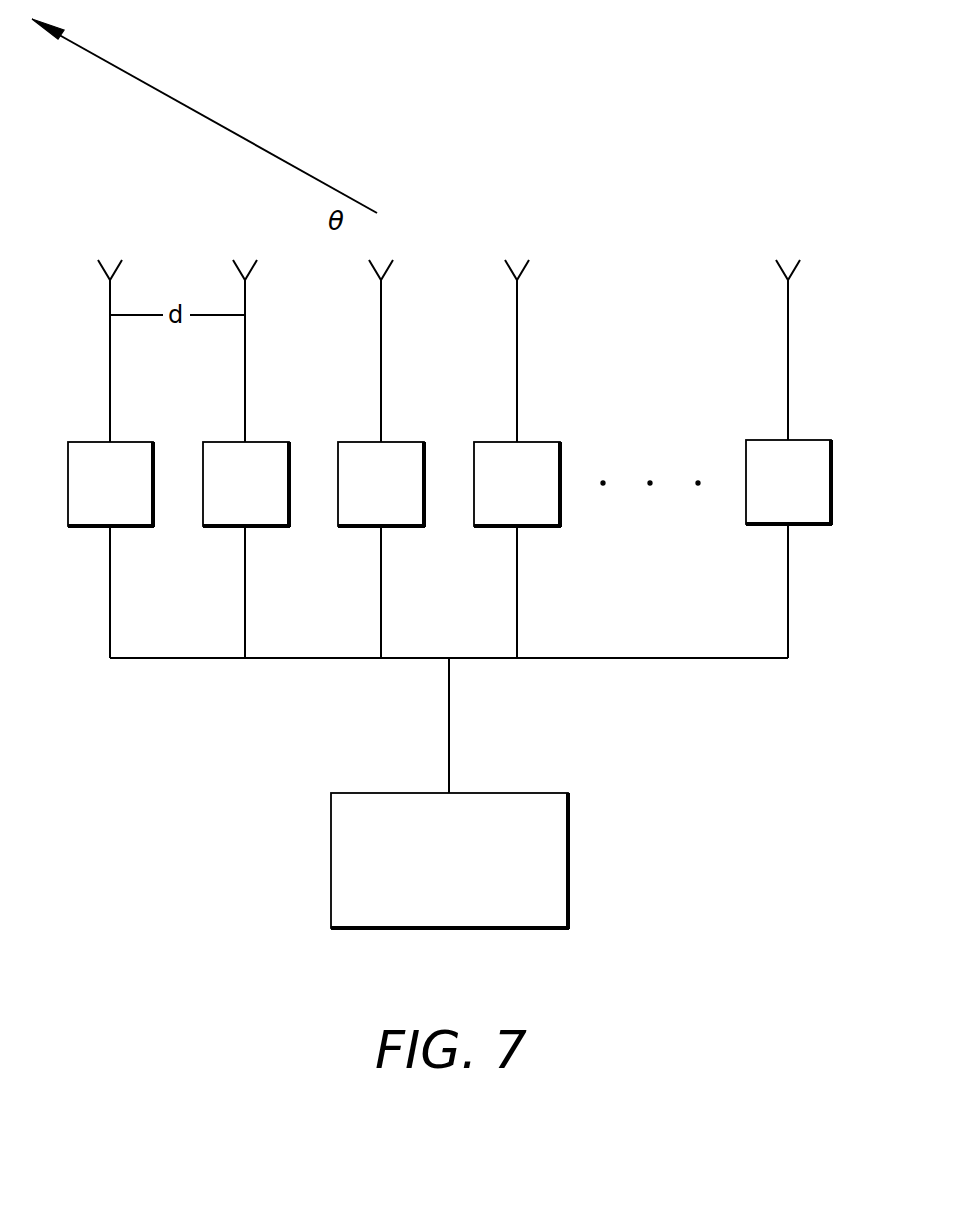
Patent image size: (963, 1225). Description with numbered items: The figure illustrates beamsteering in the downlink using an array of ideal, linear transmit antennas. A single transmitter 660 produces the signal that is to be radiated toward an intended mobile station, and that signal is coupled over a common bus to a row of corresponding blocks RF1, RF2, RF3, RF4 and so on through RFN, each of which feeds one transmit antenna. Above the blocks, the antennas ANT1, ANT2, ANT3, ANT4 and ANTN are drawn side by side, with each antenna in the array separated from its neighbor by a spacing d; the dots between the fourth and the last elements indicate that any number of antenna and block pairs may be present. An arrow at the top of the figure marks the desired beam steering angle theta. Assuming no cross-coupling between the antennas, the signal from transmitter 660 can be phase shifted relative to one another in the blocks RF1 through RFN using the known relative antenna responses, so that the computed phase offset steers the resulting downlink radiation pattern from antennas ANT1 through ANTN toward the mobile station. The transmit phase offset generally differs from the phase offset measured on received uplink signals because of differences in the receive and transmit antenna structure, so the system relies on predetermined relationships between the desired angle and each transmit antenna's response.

The transmitter 660 is at (568, 861).
The transmit antenna ANT1 is at (110, 380).
The transmit antenna ANT2 is at (245, 380).
The transmit antenna ANT3 is at (381, 380).
The transmit antenna ANT4 is at (517, 380).
The transmit antenna ANTN is at (788, 380).
The RF block RF1 is at (111, 484).
The RF block RF2 is at (246, 484).
The RF block RF3 is at (381, 484).
The RF block RF4 is at (517, 484).
The RF block RFN is at (789, 482).